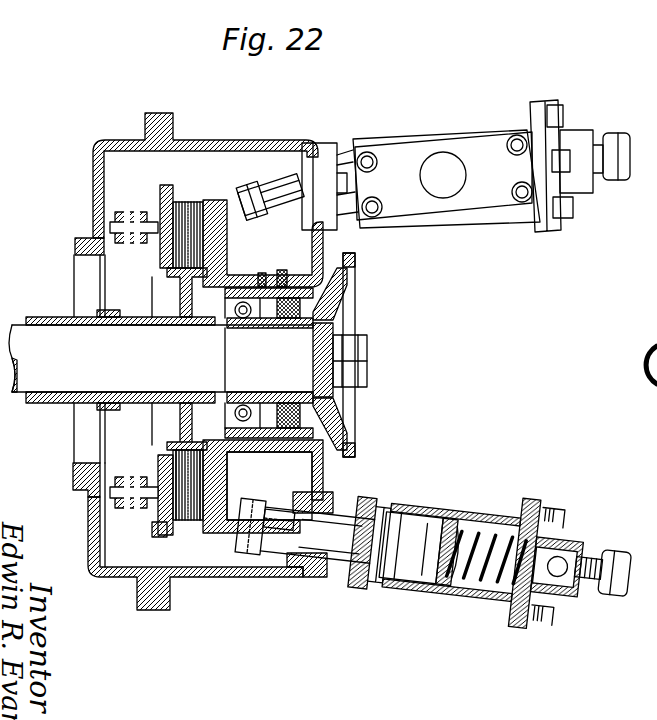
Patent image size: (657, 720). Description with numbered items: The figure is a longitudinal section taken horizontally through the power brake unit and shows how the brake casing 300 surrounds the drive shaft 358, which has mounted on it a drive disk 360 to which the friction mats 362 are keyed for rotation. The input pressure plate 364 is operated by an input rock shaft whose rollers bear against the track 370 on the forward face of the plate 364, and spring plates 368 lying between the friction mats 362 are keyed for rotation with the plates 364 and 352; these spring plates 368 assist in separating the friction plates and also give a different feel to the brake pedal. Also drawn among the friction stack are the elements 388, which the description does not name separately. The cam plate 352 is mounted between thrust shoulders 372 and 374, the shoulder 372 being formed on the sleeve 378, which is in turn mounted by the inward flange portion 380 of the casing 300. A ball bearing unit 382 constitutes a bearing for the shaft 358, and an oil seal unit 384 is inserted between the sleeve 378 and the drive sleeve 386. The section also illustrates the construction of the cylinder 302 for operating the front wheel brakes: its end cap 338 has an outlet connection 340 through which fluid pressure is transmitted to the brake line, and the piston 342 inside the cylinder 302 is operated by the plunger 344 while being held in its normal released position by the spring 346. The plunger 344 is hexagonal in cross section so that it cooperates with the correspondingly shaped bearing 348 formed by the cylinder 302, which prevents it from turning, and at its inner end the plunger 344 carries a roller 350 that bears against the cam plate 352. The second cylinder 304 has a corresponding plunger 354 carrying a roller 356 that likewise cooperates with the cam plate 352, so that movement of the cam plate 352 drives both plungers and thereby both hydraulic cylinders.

The power brake casing 300 is at (230, 130).
The cylinder 302 is at (468, 512).
The cylinder 304 is at (446, 135).
The end cap 338 is at (560, 562).
The outlet connection 340 is at (580, 552).
The piston 342 is at (410, 530).
The plunger 344 is at (332, 548).
The spring 346 is at (490, 528).
The bearing 348 is at (360, 494).
The roller 350 is at (244, 534).
The cam plate 352 is at (224, 505).
The plunger 354 is at (290, 187).
The roller 356 is at (263, 193).
The drive shaft 358 is at (68, 372).
The drive disk 360 is at (178, 426).
The friction mats 362 is at (173, 502).
The input pressure plate 364 is at (157, 526).
The spring plates 368 is at (112, 226).
The track 370 is at (166, 215).
The thrust shoulder 372 is at (223, 273).
The thrust shoulder 374 is at (262, 272).
The sleeve 378 is at (282, 270).
The inward flange portion 380 is at (264, 495).
The ball bearing unit 382 is at (220, 298).
The oil seal unit 384 is at (300, 304).
The drive sleeve 386 is at (330, 315).
The springs 388 is at (197, 205).